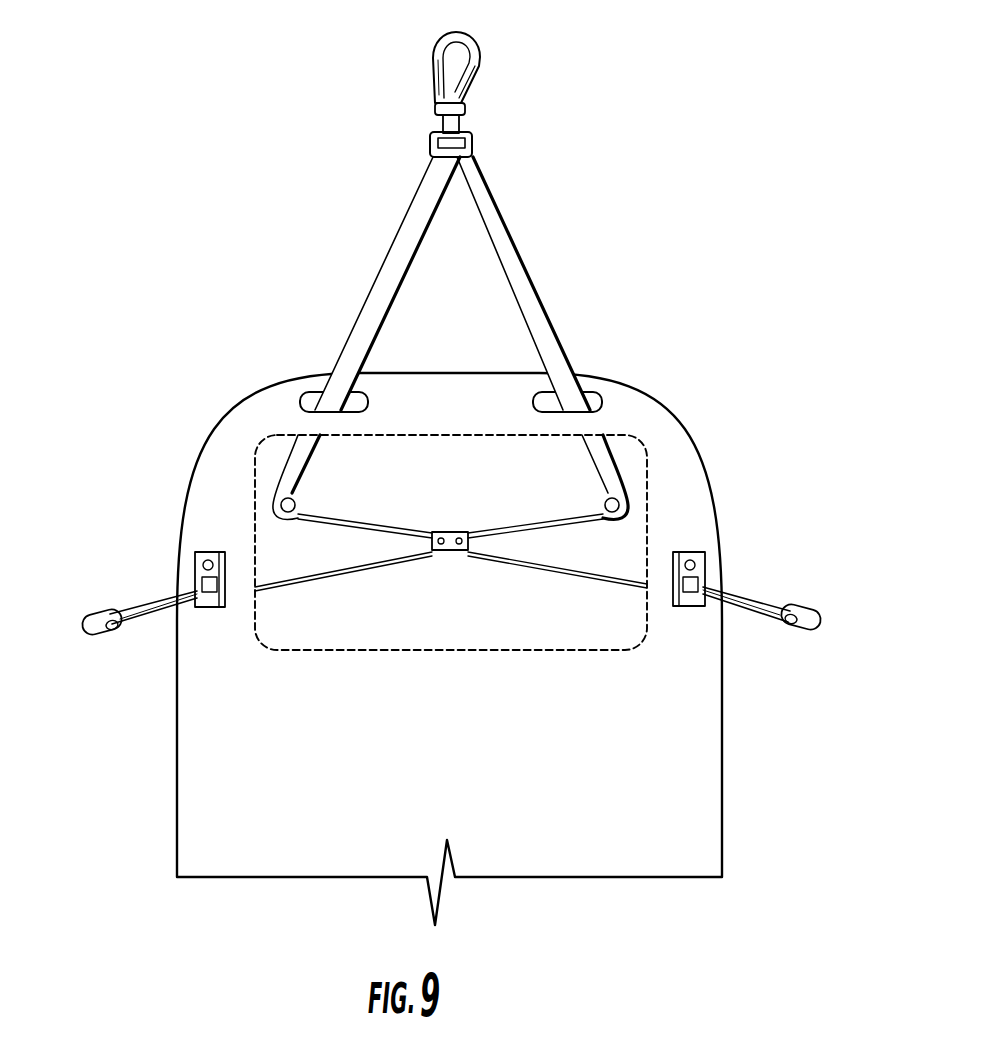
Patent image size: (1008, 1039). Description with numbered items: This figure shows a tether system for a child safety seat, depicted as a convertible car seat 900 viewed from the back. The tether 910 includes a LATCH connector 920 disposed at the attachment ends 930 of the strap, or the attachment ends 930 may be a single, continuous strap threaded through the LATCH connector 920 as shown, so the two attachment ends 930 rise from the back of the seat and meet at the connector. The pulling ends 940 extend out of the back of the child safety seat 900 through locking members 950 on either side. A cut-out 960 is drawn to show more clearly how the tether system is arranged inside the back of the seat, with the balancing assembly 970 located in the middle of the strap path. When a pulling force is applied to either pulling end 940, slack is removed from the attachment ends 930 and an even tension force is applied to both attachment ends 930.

The convertible car seat 900 is at (706, 430).
The tether 910 is at (450, 325).
The LATCH connector 920 is at (478, 84).
The attachment ends 930 is at (470, 192).
The pulling ends 940 is at (120, 610).
The locking members 950 is at (207, 552).
The cut-out 960 is at (630, 432).
The balancing assembly 970 is at (453, 551).